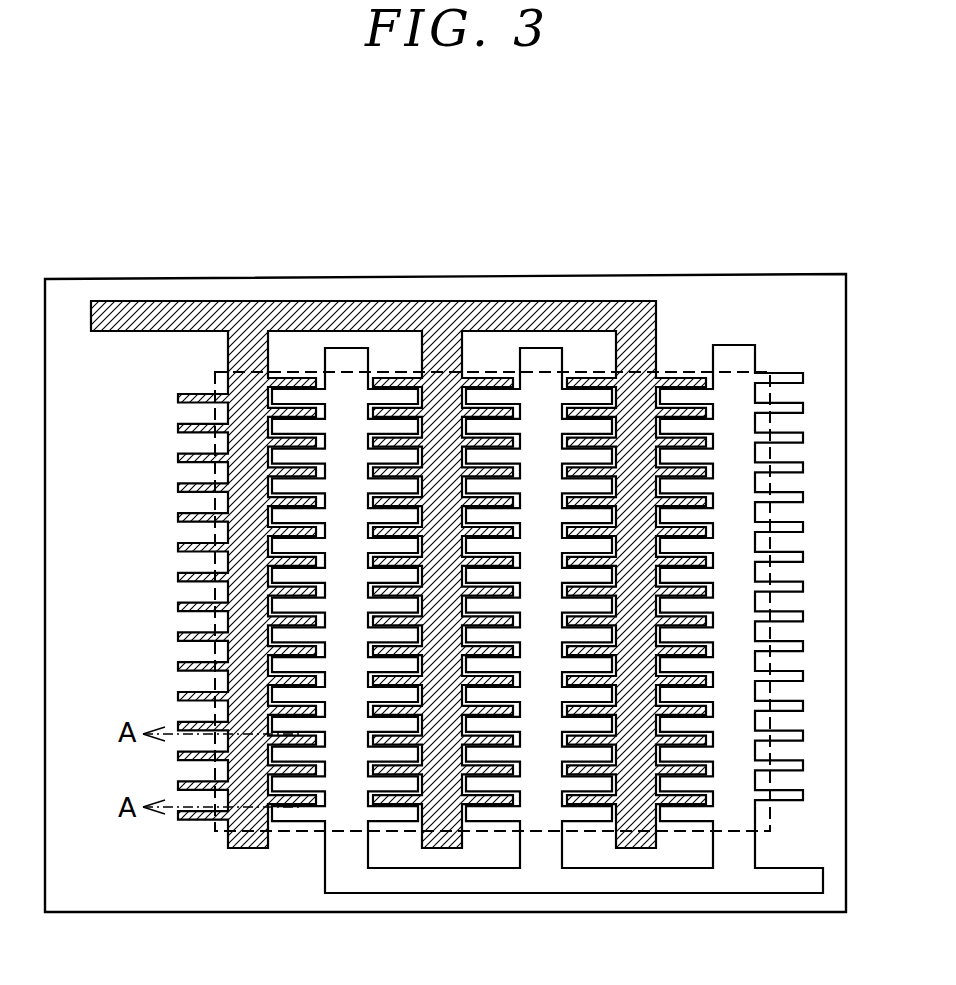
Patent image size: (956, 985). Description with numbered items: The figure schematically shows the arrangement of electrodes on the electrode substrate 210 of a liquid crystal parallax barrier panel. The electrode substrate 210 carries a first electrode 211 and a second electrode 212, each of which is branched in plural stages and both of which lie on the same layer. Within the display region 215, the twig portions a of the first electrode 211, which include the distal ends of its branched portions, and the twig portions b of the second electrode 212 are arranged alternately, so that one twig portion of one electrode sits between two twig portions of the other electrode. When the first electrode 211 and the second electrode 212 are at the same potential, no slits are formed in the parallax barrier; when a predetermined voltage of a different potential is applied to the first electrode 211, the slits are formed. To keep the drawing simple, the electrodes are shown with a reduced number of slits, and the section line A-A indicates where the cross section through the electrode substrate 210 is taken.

The electrode substrate 210 is at (410, 228).
The first electrode 211 is at (145, 301).
The second electrode 212 is at (730, 353).
The display region 215 is at (215, 373).
The twig portions a is at (293, 740).
The twig portions b is at (313, 787).